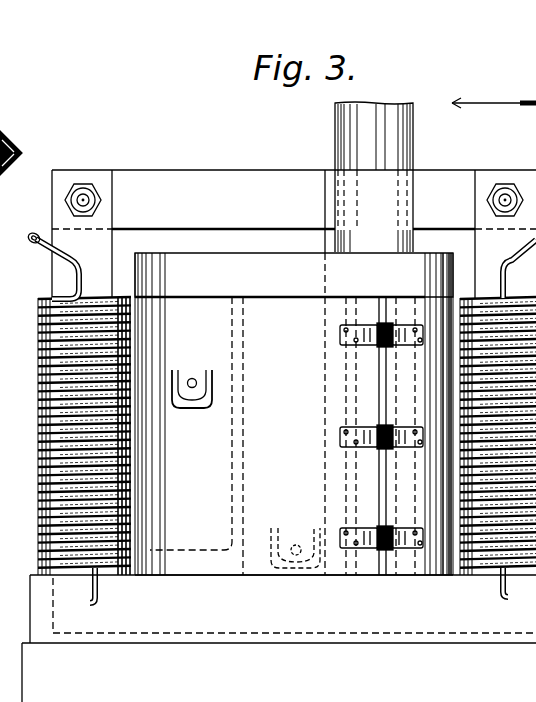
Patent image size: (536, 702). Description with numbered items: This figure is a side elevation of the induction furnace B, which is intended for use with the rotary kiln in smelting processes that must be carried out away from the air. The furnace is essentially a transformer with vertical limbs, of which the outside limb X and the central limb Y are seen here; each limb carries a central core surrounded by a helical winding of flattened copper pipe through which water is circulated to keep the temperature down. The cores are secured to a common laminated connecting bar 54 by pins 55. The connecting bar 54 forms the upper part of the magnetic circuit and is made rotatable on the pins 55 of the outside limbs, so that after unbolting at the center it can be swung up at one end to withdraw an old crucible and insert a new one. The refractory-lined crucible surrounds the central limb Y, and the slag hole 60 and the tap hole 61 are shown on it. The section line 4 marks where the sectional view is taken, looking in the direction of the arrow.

The section line 4— 4 is at (295, 683).
The laminated connecting bar 54 is at (181, 176).
The pins 55 is at (84, 199).
The slag hole 60 is at (195, 378).
The tap hole 61 is at (300, 556).
The limb X is at (50, 269).
The central limb Y is at (263, 243).
The induction furnace B is at (255, 140).